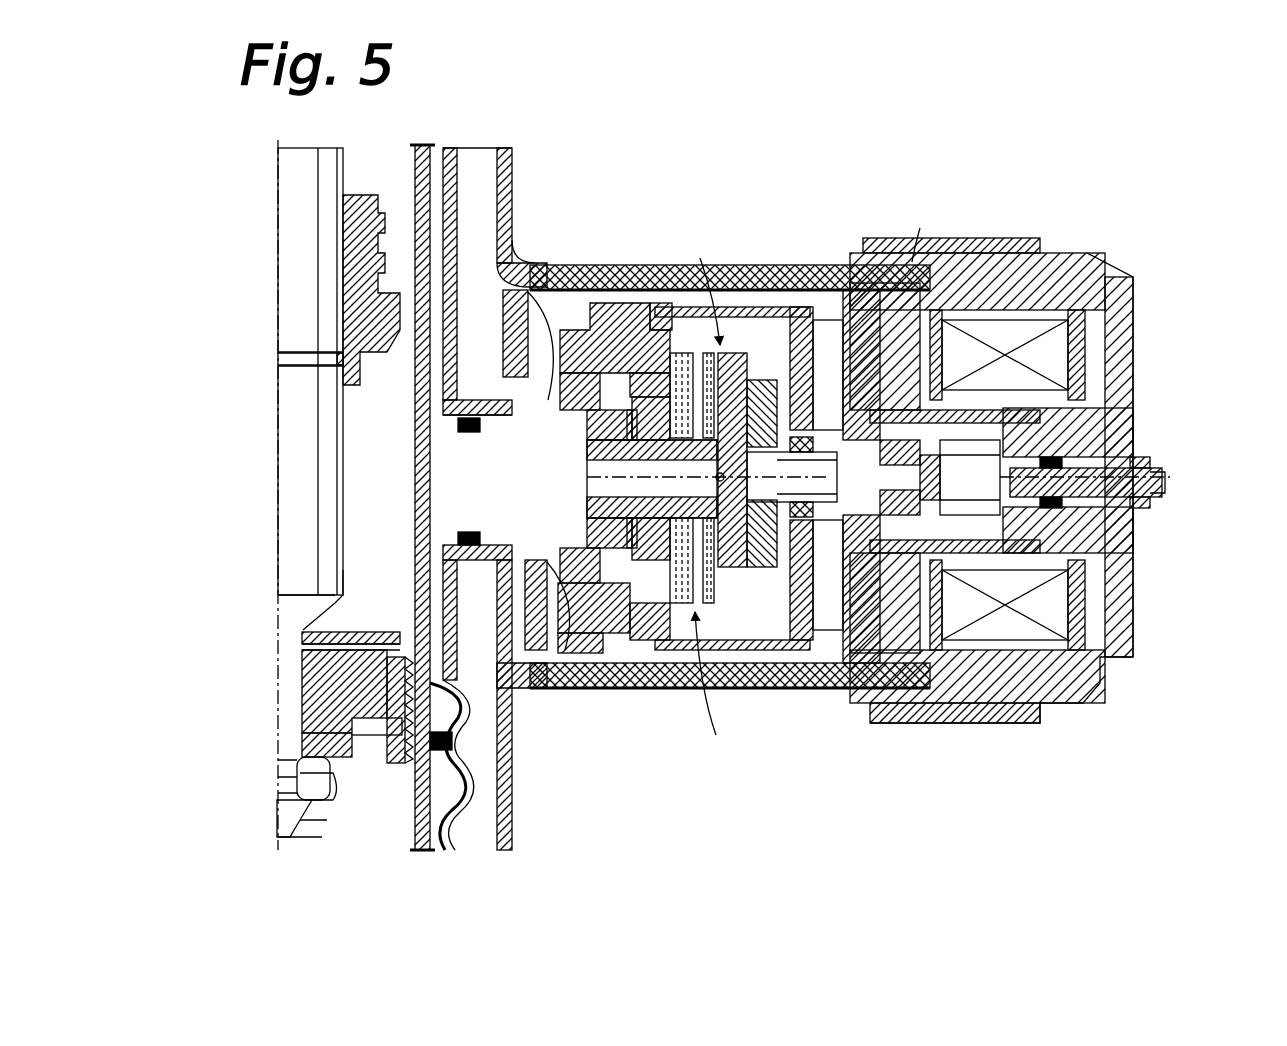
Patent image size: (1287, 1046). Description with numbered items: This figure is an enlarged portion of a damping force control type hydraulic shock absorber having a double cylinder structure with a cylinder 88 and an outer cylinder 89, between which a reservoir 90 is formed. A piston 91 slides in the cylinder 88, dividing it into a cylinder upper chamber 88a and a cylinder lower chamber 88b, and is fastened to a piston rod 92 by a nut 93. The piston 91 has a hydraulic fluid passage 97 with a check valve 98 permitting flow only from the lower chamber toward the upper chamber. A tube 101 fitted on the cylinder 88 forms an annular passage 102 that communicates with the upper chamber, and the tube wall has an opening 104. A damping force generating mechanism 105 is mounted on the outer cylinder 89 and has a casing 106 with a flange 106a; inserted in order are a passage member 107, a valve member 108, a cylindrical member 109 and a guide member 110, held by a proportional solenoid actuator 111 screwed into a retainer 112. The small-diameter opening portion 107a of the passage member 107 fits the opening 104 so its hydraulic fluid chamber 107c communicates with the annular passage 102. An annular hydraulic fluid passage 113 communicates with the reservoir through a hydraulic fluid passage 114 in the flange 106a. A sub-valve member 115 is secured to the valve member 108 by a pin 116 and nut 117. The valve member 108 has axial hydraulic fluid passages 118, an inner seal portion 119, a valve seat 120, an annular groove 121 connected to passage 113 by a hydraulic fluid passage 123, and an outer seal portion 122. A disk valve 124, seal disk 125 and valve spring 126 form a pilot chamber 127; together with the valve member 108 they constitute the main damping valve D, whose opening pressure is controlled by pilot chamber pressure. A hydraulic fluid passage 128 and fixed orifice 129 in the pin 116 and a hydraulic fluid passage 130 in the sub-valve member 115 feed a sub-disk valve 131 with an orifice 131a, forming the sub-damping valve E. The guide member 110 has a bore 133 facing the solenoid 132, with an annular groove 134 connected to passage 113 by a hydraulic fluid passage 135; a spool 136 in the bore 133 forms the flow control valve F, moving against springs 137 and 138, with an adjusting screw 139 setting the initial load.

The cylinder 88 is at (428, 180).
The cylinder upper chamber 88a is at (345, 398).
The cylinder lower chamber 88b is at (318, 835).
The outer cylinder 89 is at (462, 185).
The reservoir 90 is at (498, 200).
The piston 91 is at (340, 690).
The piston rod 92 is at (290, 160).
The nut 93 is at (282, 790).
The hydraulic fluid passage 97 is at (305, 772).
The check valve 98 is at (335, 614).
The tube 101 is at (455, 238).
The annular passage 102 is at (505, 262).
The opening 104 is at (590, 487).
The damping force generating mechanism 105 is at (1170, 308).
The casing 106 is at (872, 265).
The flange 106a is at (618, 292).
The passage member 107 is at (598, 330).
The small-diameter opening portion 107a is at (590, 430).
The hydraulic fluid chamber 107c is at (518, 690).
The valve member 108 is at (660, 308).
The cylindrical member 109 is at (780, 330).
The guide member 110 is at (805, 320).
The proportional solenoid actuator 111 is at (1110, 262).
The retainer 112 is at (988, 238).
The annular hydraulic fluid passage 113 is at (760, 663).
The hydraulic fluid passage 114 is at (508, 750).
The sub-valve member 115 is at (737, 380).
The pin 116 is at (788, 645).
The nut 117 is at (578, 600).
The hydraulic fluid passages 118 is at (592, 600).
The inner seal portion 119 is at (640, 650).
The valve seat 120 is at (718, 660).
The annular groove 121 is at (645, 650).
The outer seal portion 122 is at (740, 675).
The hydraulic fluid passage 123 is at (662, 625).
The disk valve 124 is at (703, 320).
The seal disk 125 is at (690, 345).
The valve spring 126 is at (714, 360).
The pilot chamber 127 is at (833, 300).
The hydraulic fluid passage 128 is at (492, 797).
The fixed orifice 129 is at (770, 665).
The hydraulic fluid passage 130 is at (852, 320).
The sub-disk valve 131 is at (800, 705).
The orifice 131a is at (782, 690).
The solenoid 132 is at (1066, 340).
The bore 133 is at (936, 705).
The annular groove 134 is at (878, 680).
The hydraulic fluid passage 135 is at (890, 665).
The spool 136 is at (975, 660).
The spring 137 is at (1112, 538).
The spring 138 is at (862, 690).
The adjusting screw 139 is at (1112, 455).
The main damping valve D is at (703, 286).
The sub-damping valve E is at (711, 688).
The flow control valve F is at (914, 231).